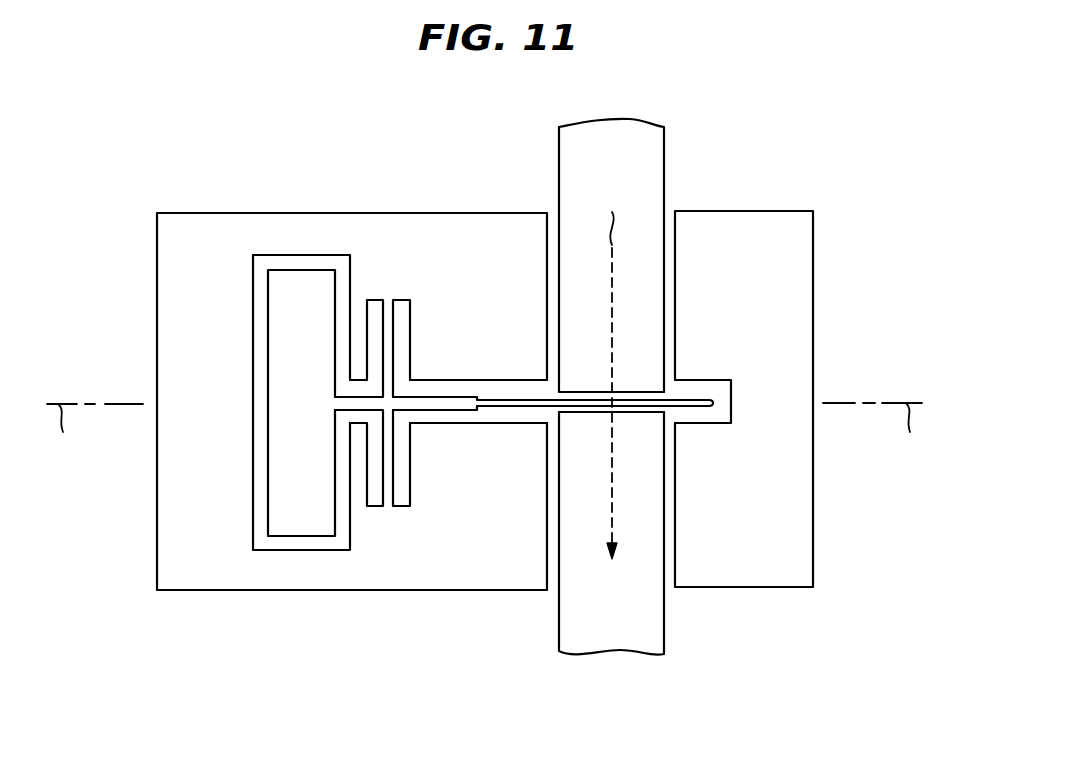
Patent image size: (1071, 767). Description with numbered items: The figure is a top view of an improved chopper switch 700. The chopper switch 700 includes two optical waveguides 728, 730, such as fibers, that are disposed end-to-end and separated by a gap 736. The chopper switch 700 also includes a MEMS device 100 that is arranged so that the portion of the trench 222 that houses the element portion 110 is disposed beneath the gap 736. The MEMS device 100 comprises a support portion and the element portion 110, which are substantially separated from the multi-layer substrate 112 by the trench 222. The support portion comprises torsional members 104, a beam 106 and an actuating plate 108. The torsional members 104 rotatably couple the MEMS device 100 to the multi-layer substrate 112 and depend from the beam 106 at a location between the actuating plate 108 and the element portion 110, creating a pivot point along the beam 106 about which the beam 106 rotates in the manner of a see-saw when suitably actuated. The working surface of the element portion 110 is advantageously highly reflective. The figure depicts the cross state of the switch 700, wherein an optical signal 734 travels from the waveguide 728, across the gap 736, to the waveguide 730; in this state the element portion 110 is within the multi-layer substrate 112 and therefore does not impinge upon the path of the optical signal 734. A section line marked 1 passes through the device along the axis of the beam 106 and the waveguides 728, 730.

The chopper switch 700 is at (355, 139).
The MEMS device 100 is at (400, 233).
The torsional members 104 is at (387, 338).
The beam 106 is at (449, 406).
The actuating plate 108 is at (295, 287).
The element portion 110 is at (700, 396).
The multi-layer substrate 112 is at (139, 321).
The trench 222 is at (705, 391).
The optical waveguide 728 is at (655, 148).
The optical waveguide 730 is at (571, 622).
The optical signal 734 is at (624, 371).
The gap 736 is at (681, 414).
The section line 1 is at (484, 431).